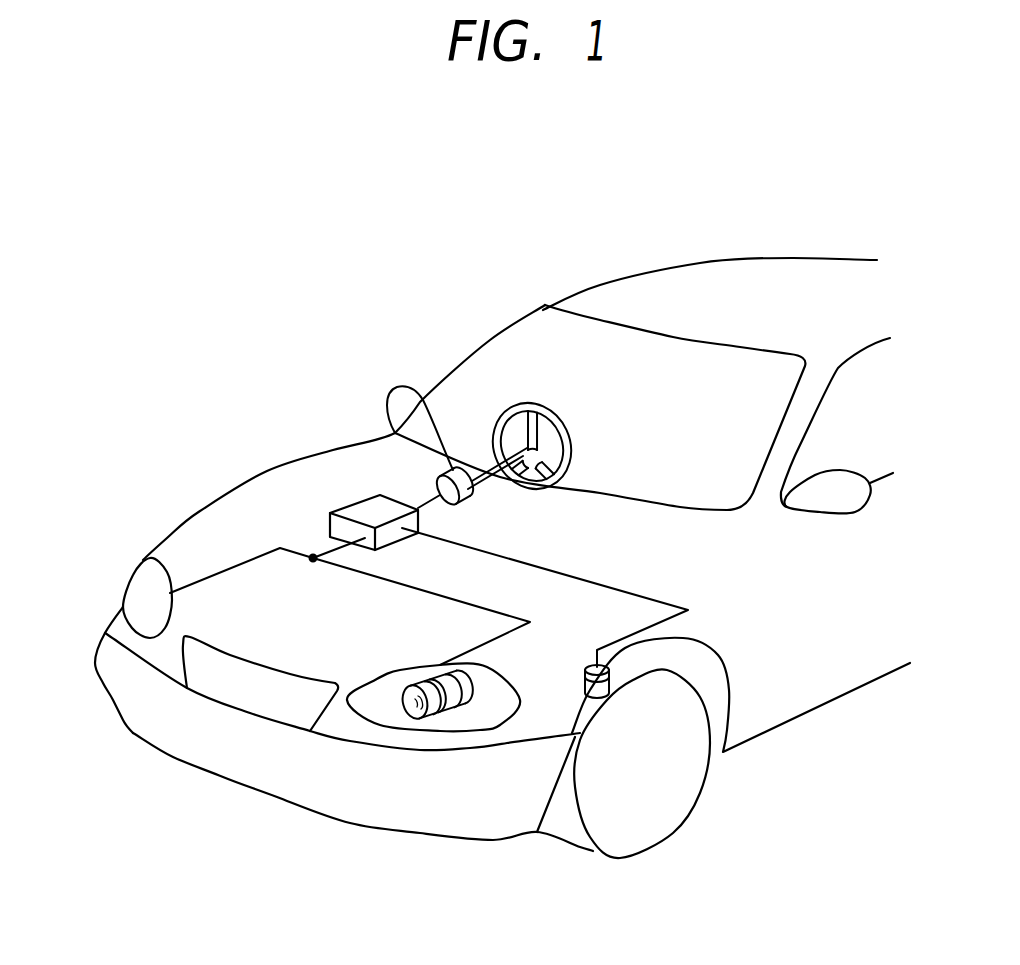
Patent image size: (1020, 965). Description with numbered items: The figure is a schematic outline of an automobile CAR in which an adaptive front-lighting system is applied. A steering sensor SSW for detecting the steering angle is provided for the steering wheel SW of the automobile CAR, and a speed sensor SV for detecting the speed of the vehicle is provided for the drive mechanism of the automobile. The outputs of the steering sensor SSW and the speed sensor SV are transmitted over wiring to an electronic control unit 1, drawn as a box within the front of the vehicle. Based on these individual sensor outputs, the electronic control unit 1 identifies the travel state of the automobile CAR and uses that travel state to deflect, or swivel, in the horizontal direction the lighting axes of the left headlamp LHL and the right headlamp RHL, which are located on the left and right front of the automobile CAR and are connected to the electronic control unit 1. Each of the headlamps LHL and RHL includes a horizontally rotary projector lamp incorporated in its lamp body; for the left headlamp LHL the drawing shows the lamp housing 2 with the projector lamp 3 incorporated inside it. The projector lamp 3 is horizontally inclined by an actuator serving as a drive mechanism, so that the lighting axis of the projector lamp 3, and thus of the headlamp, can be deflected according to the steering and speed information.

The automobile CAR is at (665, 268).
The steering wheel SW is at (516, 402).
The steering sensor SSW is at (388, 410).
The electronic control unit (ECU) 1 is at (367, 507).
The right headlamp RHL is at (133, 595).
The left headlamp LHL is at (440, 781).
The lamp housing 2 is at (506, 728).
The projector lamp 3 is at (450, 708).
The speed sensor SV is at (610, 683).